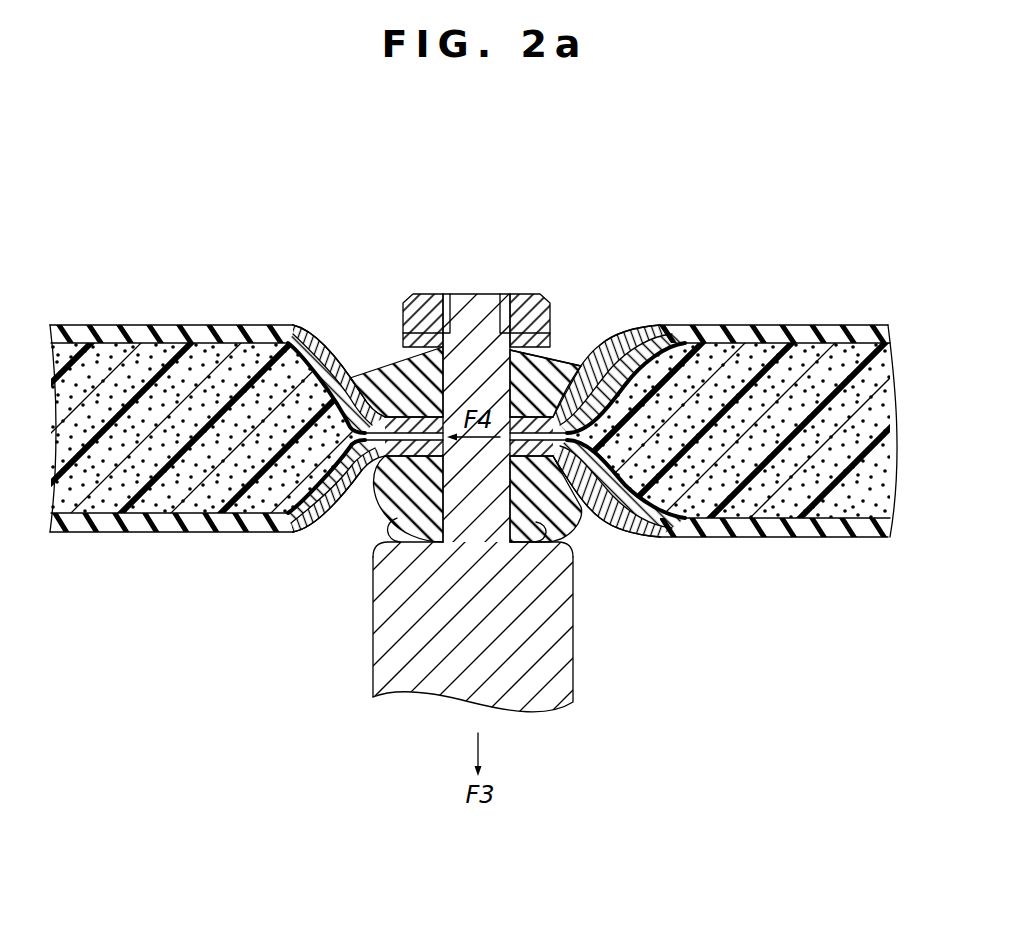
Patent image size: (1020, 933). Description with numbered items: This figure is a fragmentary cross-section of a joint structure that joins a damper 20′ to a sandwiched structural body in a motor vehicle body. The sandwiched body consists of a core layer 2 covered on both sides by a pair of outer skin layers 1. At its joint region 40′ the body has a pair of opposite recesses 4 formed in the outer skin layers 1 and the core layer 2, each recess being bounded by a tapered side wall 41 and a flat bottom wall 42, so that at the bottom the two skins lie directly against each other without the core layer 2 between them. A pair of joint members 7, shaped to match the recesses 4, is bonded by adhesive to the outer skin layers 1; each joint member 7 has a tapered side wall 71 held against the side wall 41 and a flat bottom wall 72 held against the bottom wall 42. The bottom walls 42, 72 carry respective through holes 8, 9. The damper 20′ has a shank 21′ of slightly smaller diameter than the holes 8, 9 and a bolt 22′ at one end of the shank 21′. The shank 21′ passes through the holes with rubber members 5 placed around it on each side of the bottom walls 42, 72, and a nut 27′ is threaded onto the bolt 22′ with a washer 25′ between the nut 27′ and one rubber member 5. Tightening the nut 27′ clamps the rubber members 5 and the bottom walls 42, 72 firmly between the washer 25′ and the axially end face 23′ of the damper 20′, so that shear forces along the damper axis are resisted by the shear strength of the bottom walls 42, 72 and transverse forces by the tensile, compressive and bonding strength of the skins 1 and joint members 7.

The outer skin layers 1 is at (141, 332).
The core layer 2 is at (84, 340).
The recesses 4 is at (489, 399).
The tapered side wall 41 is at (338, 368).
The flat bottom wall 42 is at (378, 372).
The rubber members 5 is at (395, 396).
The joint members 7 is at (501, 421).
The tapered side wall 71 is at (592, 360).
The flat bottom wall 72 is at (563, 408).
The through hole 8 is at (458, 300).
The through hole 9 is at (492, 300).
The damper 20′ is at (582, 539).
The shank 21′ is at (456, 545).
The bolt 22′ is at (478, 300).
The axially end face 23′ is at (374, 597).
The washer 25′ is at (548, 390).
The nut 27′ is at (527, 305).
The joint region 40′ is at (490, 263).